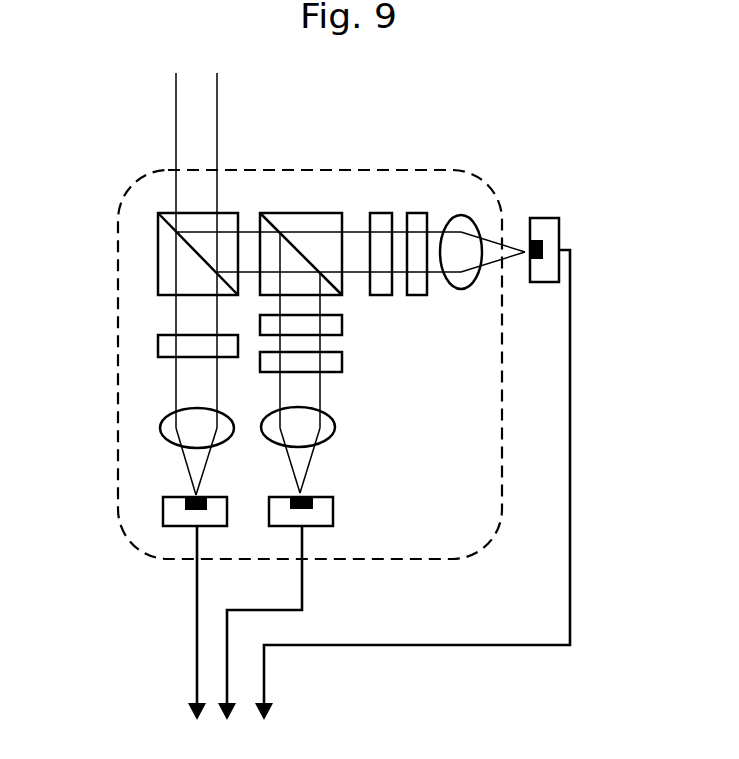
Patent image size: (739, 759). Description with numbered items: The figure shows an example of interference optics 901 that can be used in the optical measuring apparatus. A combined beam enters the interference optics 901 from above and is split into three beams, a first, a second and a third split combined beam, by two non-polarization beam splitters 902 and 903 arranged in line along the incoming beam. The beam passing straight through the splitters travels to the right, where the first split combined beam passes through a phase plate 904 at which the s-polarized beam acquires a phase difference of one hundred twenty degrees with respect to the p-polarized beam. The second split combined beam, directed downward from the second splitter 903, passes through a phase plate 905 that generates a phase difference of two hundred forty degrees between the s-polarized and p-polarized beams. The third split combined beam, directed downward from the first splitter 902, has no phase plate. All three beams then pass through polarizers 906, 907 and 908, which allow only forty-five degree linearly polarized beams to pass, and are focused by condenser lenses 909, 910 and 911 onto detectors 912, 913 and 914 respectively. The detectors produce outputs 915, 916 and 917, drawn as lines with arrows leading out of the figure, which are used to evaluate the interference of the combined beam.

The interference optics 901 is at (118, 492).
The non-polarization beam splitter 902 is at (158, 262).
The non-polarization beam splitter 903 is at (293, 213).
The phase plate 904 is at (375, 213).
The phase plate 905 is at (342, 323).
The polarizer 906 is at (418, 213).
The polarizer 907 is at (342, 360).
The polarizer 908 is at (158, 337).
The condenser lens 909 is at (468, 217).
The condenser lens 910 is at (335, 422).
The condenser lens 911 is at (172, 415).
The detector 912 is at (550, 218).
The detector 913 is at (333, 500).
The detector 914 is at (175, 497).
The output 915 is at (570, 295).
The output 916 is at (305, 583).
The output 917 is at (195, 605).